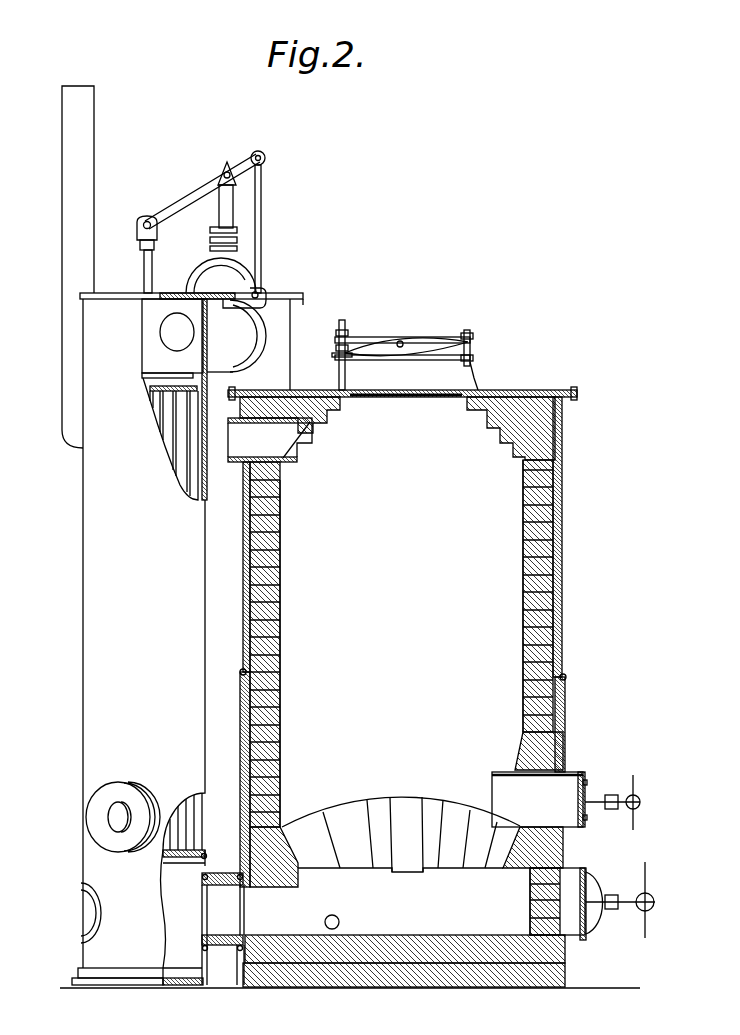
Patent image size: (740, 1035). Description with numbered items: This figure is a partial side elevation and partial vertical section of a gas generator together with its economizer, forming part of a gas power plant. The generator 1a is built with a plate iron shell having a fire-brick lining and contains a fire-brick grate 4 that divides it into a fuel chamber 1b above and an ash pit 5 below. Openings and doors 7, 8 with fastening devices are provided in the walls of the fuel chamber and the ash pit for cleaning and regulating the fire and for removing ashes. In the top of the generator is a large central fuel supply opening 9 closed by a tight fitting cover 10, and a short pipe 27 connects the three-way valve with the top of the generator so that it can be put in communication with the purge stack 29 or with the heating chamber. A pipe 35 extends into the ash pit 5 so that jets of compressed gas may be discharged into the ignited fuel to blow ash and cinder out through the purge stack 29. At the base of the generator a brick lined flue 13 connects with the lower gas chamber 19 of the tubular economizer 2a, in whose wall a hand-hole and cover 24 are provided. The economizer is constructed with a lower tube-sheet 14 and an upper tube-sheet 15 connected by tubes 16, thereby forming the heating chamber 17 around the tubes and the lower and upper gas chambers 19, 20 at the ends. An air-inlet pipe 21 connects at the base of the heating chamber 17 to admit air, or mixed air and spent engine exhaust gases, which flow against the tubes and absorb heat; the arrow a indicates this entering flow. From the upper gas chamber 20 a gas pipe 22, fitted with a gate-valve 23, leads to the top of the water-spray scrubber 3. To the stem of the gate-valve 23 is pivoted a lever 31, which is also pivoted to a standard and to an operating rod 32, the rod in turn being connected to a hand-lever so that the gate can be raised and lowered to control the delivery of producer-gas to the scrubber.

The generator 1a is at (558, 630).
The fuel chamber 1b is at (401, 643).
The tubular economizer 2a is at (187, 639).
The water-spray scrubber 3 is at (287, 331).
The fire-brick grate 4 is at (403, 812).
The ash pit 5 is at (404, 907).
The opening and door 7 is at (566, 801).
The opening and door 8 is at (570, 887).
The fuel supply opening 9 is at (415, 398).
The cover 10 is at (410, 350).
The brick lined flue 13 is at (223, 929).
The lower tube-sheet 14 is at (200, 843).
The upper tube-sheet 15 is at (148, 402).
The tubes 16 is at (187, 432).
The heating chamber 17 is at (172, 470).
The lower gas chamber 19 is at (183, 945).
The upper gas chamber 20 is at (149, 353).
The air-inlet pipe 21 is at (113, 793).
The gas pipe 22 is at (177, 332).
The valve 23 is at (243, 325).
The hand-hole and cover 24 is at (86, 908).
The short pipe 27 is at (270, 440).
The purge stack 29 is at (62, 254).
The lever 31 is at (196, 193).
The operating rod 32 is at (147, 273).
The pipe 35 is at (338, 916).
The arrow a is at (111, 825).